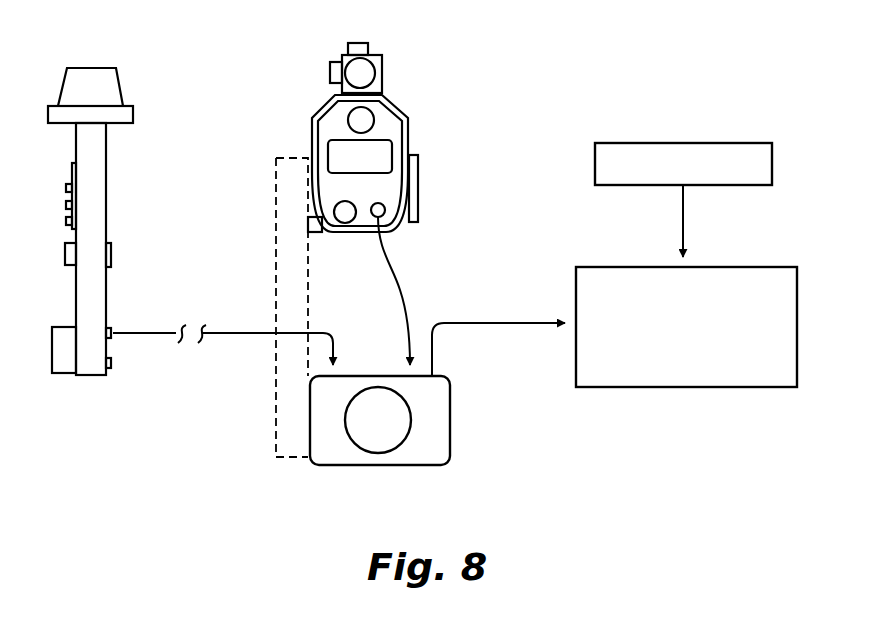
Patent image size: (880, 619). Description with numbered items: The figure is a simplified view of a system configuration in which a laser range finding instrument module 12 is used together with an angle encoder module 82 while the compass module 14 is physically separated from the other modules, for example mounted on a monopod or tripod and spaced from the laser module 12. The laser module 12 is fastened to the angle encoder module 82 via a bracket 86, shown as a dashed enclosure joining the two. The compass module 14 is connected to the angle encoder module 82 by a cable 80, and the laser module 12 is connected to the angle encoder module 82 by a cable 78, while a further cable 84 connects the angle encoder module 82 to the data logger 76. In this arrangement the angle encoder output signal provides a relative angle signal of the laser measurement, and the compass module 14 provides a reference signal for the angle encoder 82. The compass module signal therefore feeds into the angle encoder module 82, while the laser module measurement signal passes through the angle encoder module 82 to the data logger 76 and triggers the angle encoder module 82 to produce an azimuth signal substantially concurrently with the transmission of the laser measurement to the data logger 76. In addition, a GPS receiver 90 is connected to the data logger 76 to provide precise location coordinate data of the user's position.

The laser range finding instrument module 12 is at (405, 112).
The compass module 14 is at (110, 160).
The data logger 76 is at (723, 387).
The cable 78 is at (408, 308).
The cable 80 is at (155, 333).
The angle encoder module 82 is at (450, 438).
The cable 84 is at (487, 323).
The bracket 86 is at (273, 298).
The GPS receiver 90 is at (657, 143).